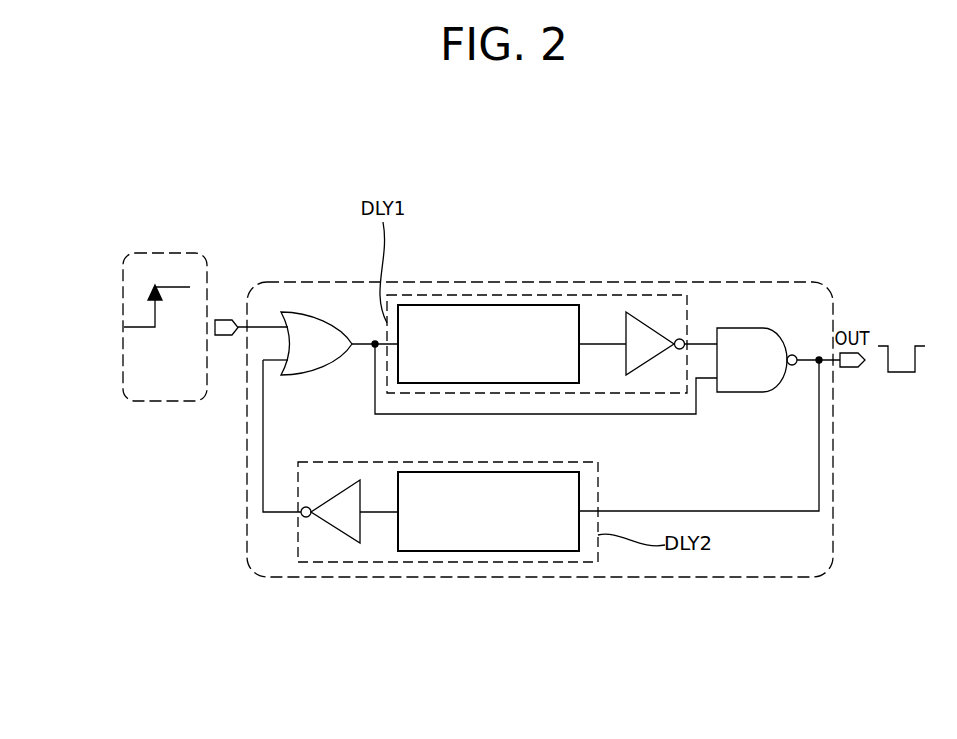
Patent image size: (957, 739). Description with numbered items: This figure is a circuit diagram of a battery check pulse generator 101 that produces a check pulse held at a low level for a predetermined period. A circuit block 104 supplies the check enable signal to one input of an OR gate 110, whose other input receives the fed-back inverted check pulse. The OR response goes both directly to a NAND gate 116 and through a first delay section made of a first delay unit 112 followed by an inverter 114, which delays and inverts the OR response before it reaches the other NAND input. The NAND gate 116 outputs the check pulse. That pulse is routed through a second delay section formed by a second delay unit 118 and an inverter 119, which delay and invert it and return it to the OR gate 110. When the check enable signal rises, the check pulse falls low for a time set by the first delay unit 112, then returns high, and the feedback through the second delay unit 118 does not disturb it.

The battery check pulse generator 101 is at (695, 282).
The circuit block 104 is at (165, 253).
The OR gate 110 is at (310, 312).
The first delay unit 112 is at (520, 305).
The inverter 114 is at (648, 318).
The NAND gate 116 is at (755, 328).
The second delay unit 118 is at (580, 487).
The inverter 119 is at (330, 492).